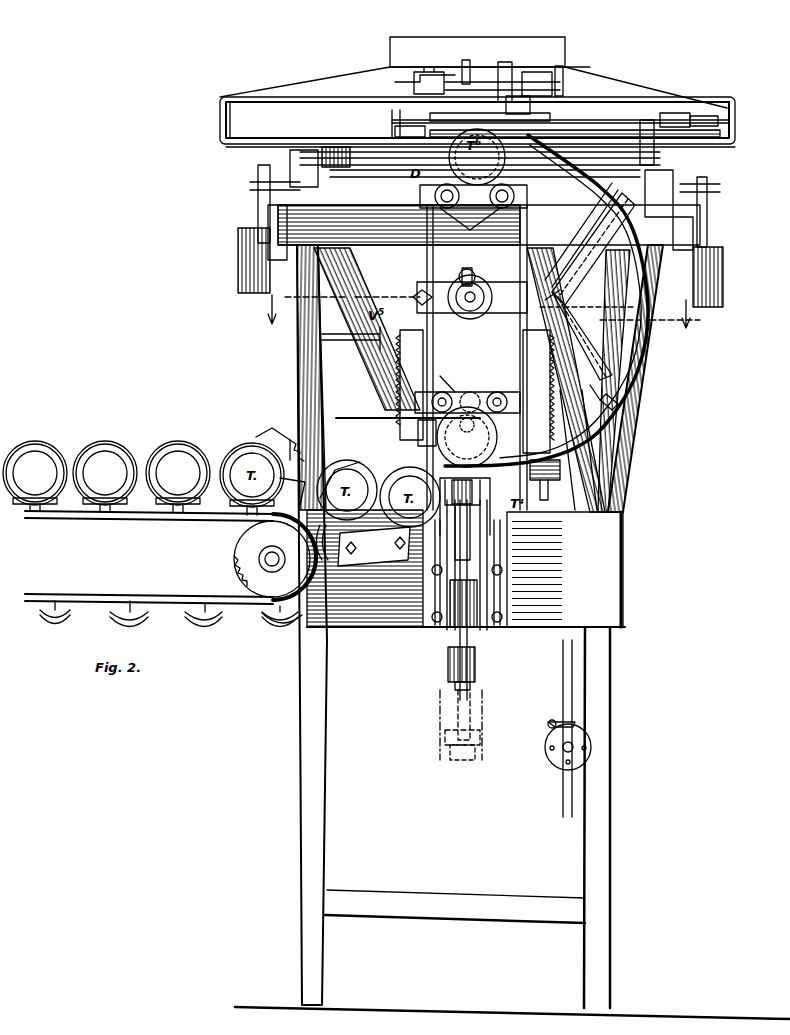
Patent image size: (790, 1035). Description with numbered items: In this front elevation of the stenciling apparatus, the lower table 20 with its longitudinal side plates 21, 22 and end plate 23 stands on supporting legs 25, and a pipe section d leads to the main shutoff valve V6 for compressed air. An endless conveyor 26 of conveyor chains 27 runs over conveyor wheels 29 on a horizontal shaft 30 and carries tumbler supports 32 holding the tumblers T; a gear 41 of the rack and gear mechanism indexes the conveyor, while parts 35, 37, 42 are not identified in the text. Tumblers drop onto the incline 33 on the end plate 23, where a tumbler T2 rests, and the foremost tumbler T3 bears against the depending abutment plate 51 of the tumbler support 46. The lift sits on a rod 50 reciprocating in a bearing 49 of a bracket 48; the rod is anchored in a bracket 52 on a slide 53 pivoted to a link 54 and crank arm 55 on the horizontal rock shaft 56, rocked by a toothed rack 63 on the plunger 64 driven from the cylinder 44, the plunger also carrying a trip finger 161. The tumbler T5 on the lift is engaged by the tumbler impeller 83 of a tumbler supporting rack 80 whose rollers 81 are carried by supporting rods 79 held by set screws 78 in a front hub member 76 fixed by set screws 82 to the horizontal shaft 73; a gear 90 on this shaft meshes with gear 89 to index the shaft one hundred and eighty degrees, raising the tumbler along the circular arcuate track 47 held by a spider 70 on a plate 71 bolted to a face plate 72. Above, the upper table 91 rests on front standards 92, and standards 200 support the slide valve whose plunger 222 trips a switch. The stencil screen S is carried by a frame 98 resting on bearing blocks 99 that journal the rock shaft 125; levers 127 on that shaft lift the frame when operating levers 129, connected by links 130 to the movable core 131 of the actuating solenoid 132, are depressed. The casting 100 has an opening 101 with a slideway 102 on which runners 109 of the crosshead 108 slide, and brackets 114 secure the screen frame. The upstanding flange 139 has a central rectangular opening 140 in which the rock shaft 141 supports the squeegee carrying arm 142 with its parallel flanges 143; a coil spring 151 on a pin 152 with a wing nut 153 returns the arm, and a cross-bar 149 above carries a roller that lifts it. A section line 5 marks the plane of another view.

The casting 100 is at (220, 108).
The opening 101 is at (304, 104).
The slideway 102 is at (254, 132).
The upstanding flange 139 is at (637, 78).
The cross-bar 149 is at (565, 40).
The central rectangular opening 140 is at (567, 66).
The brackets 114 is at (702, 116).
The frame 98 is at (335, 144).
The crosshead 108 is at (395, 126).
The metal runners 109 is at (395, 130).
The parallel flanges 143 is at (530, 118).
The levers 127 is at (345, 142).
The rock shaft 125 is at (350, 170).
The coil spring 151 is at (440, 72).
The wing nut 153 is at (466, 60).
The squeegee carrying arm 142 is at (520, 58).
The rock shaft 141 is at (560, 88).
The pin 152 is at (396, 88).
The bearing blocks 99 is at (303, 168).
The operating lever 129 is at (262, 166).
The links 130 is at (252, 190).
The movable core 131 is at (268, 222).
The actuating solenoid 132 is at (240, 240).
The tumbler supporting rack 80 is at (372, 398).
The article supporting rollers 81 is at (485, 187).
The upper table 91 is at (350, 248).
The front standards 92 is at (303, 355).
The set screws 82 is at (540, 240).
The supporting rods 79 is at (430, 272).
The gear 90 is at (466, 270).
The horizontal shaft 73 is at (472, 310).
The set screws 78 is at (417, 296).
The plunger 222 is at (360, 342).
The section line 5 is at (482, 311).
The tumbler impeller 83 is at (580, 140).
The spider 70 is at (590, 258).
The face plate 72 is at (572, 280).
The plate 71 is at (586, 308).
The front hub member 76 is at (590, 312).
The standards 200 is at (395, 365).
The circular arcuate track 47 is at (600, 420).
The plunger 64 is at (600, 488).
The gear 89 is at (400, 388).
The toothed rack 63 is at (530, 445).
The link 54 is at (500, 392).
The crank arm 55 is at (472, 392).
The horizontal rock shaft 56 is at (443, 378).
The cylinder 44 is at (330, 420).
The tumbler support 46 is at (492, 490).
The actuating trip finger 161 is at (552, 484).
The lower table 20 is at (548, 518).
The guide 35 is at (340, 479).
The endless conveyor 26 is at (130, 520).
The conveyor chain 27 is at (100, 597).
The tumbler supports 32 is at (95, 520).
The conveyor wheels 29 is at (234, 558).
The horizontal shaft 30 is at (270, 570).
The guide 37 is at (292, 493).
The gear 41 is at (270, 429).
The gear 42 is at (298, 440).
The longitudinal side plate 21 is at (292, 626).
The end plate 23 is at (372, 627).
The incline 33 is at (363, 545).
The bracket 48 is at (435, 622).
The bearing 49 is at (480, 604).
The rod 50 is at (480, 555).
The depending abutment plate 51 is at (490, 541).
The slide 53 is at (476, 660).
The bracket 52 is at (455, 680).
The longitudinal side plate 22 is at (624, 605).
The supporting legs 25 is at (302, 730).
The pipe section d is at (565, 692).
The main shutoff valve V6 is at (548, 758).
The tumblers T is at (62, 436).
The tumbler T2 is at (347, 478).
The tumbler T3 is at (409, 490).
The tumbler T5 is at (473, 437).
The stencil screen S is at (660, 126).